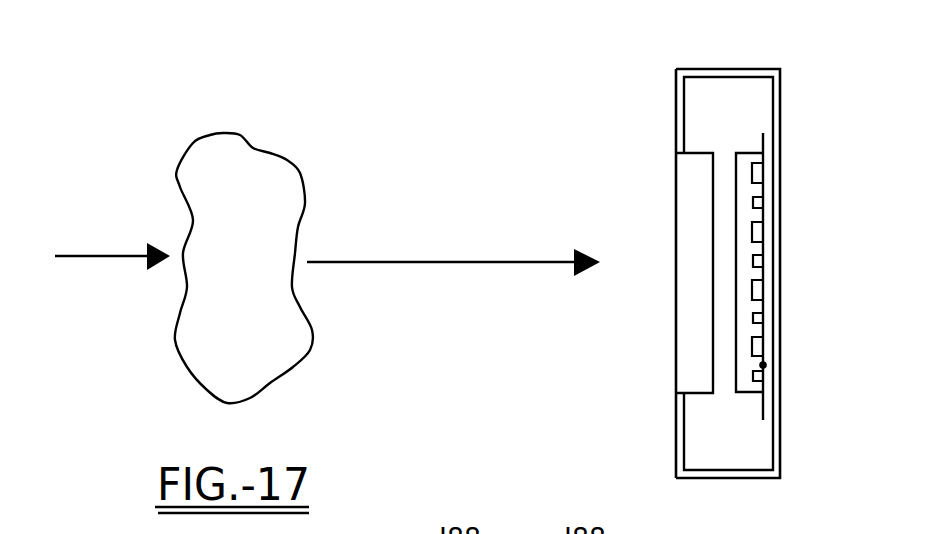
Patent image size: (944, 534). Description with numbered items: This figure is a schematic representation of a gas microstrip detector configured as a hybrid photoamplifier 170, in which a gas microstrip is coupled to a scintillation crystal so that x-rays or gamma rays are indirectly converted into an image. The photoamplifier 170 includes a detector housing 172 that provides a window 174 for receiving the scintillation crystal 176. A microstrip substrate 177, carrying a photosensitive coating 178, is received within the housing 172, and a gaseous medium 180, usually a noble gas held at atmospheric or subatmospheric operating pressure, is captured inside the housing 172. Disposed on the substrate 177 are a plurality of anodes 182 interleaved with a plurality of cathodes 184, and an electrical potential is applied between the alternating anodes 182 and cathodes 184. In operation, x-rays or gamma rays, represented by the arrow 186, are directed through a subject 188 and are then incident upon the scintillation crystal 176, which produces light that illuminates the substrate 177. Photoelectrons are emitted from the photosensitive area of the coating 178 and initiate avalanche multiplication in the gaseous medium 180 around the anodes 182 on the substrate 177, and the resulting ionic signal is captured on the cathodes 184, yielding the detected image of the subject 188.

The hybrid photoamplifier 170 is at (625, 102).
The detector housing 172 is at (677, 446).
The window 174 is at (673, 171).
The scintillation crystal 176 is at (683, 360).
The microstrip substrate 177 is at (751, 154).
The photosensitive coating 178 is at (767, 366).
The gaseous medium 180 is at (733, 96).
The anodes 182 is at (758, 319).
The cathodes 184 is at (758, 231).
The x-rays or gamma rays 186 is at (95, 255).
The subject 188 is at (282, 182).